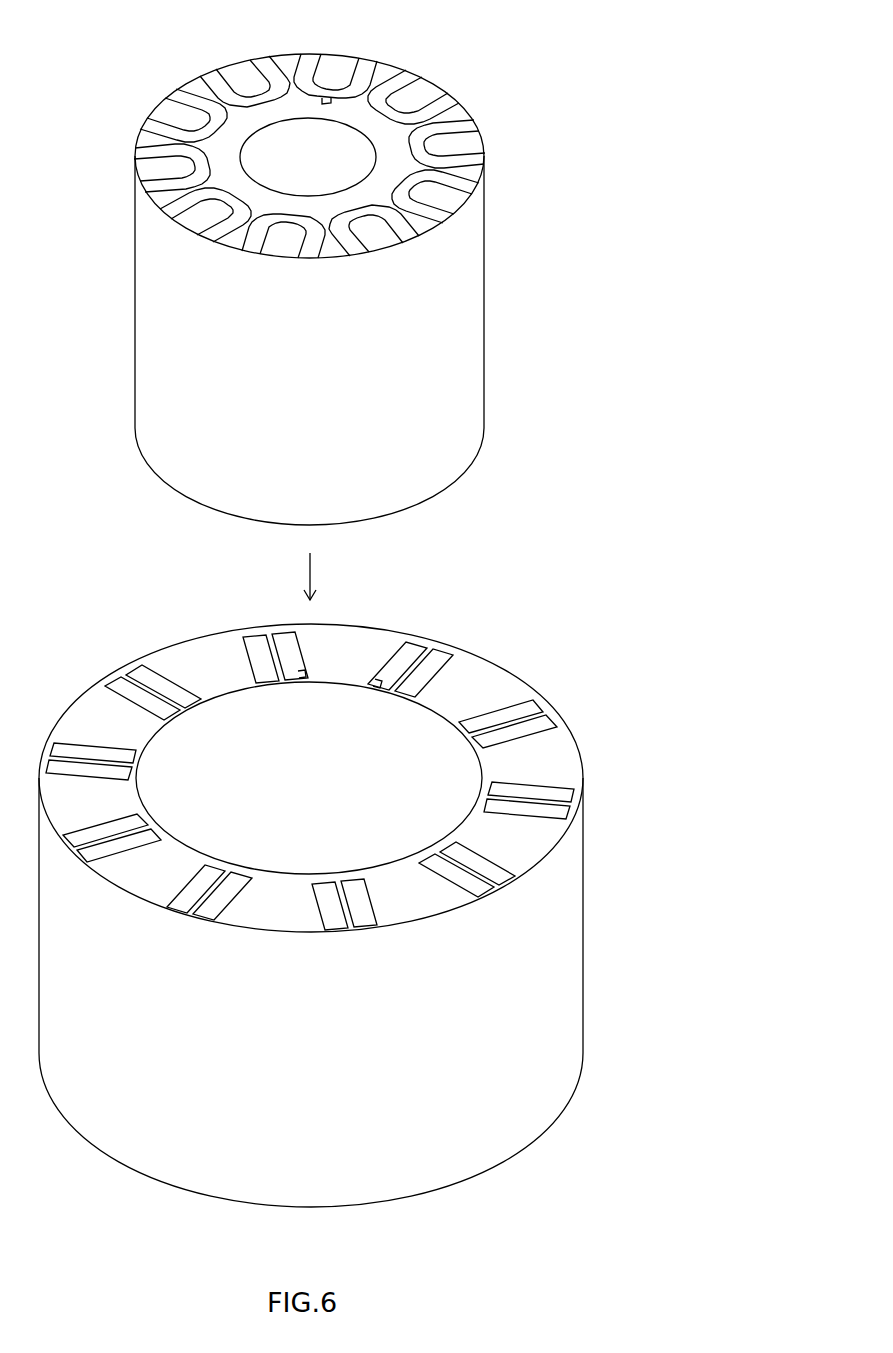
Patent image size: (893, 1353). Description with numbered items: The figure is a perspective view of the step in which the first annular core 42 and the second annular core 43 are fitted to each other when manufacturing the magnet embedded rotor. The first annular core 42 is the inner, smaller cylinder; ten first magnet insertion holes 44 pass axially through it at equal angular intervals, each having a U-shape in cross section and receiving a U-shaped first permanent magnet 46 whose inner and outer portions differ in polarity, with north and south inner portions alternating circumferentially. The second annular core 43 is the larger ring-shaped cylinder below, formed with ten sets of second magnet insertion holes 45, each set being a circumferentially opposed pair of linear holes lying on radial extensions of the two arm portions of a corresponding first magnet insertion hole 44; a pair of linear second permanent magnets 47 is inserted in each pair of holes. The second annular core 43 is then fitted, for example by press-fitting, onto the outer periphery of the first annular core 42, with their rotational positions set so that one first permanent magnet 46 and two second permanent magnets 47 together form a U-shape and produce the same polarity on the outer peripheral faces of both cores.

The first annular core 42 is at (312, 262).
The second annular core 43 is at (311, 880).
The first magnet insertion hole 44 is at (326, 104).
The second magnet insertion hole 45 is at (302, 678).
The first permanent magnet 46 is at (363, 75).
The second permanent magnet 47 is at (286, 631).